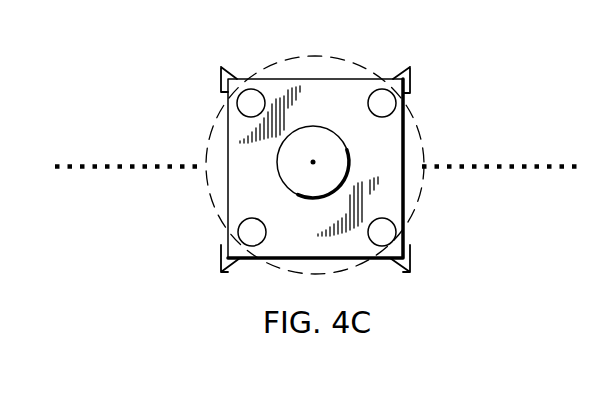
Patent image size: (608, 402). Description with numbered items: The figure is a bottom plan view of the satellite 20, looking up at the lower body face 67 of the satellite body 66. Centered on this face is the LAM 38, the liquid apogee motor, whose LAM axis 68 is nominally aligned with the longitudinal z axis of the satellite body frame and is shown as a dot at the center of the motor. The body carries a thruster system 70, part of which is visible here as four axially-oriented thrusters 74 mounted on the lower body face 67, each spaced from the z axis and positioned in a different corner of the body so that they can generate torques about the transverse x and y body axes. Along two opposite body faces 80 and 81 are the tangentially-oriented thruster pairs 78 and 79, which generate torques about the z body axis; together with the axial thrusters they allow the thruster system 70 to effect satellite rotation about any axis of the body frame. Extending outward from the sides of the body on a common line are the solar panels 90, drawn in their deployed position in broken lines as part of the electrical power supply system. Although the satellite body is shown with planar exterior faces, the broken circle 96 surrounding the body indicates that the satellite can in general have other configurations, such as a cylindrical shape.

The satellite 20 is at (192, 77).
The LAM 38 is at (279, 152).
The satellite body 66 is at (222, 139).
The lower body face 67 is at (297, 100).
The LAM axis 68 is at (313, 160).
The thruster system 70 is at (219, 268).
The axially-oriented thrusters 74 is at (408, 98).
The tangentially-oriented thruster pair 78 is at (222, 80).
The tangentially-oriented thruster pair 79 is at (218, 248).
The body face 80 is at (365, 78).
The body face 81 is at (362, 261).
The solar panels 90 is at (510, 172).
The broken circle 96 is at (207, 192).